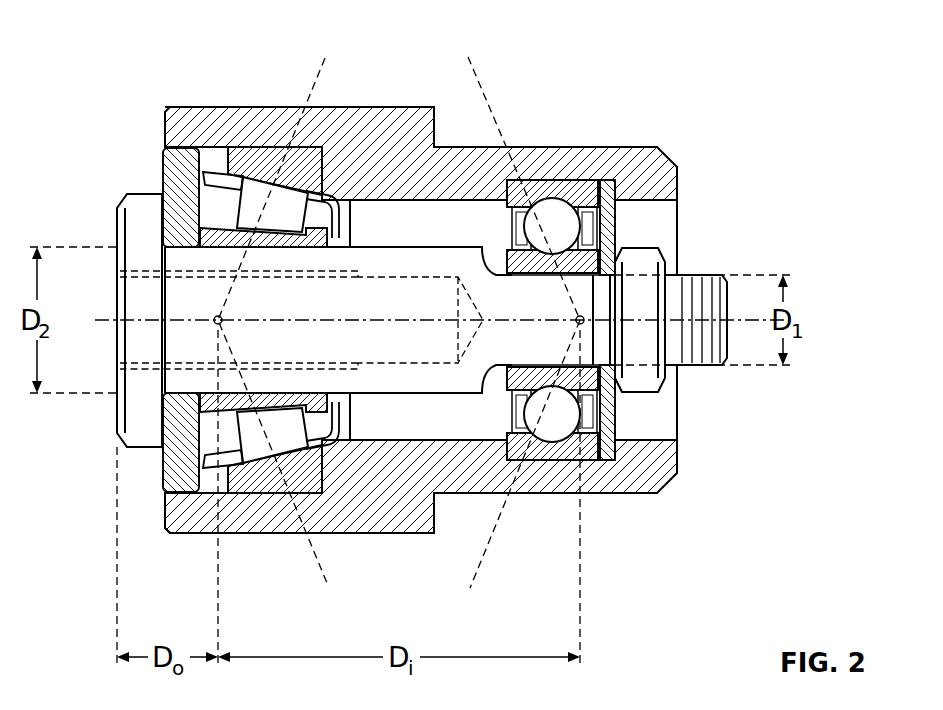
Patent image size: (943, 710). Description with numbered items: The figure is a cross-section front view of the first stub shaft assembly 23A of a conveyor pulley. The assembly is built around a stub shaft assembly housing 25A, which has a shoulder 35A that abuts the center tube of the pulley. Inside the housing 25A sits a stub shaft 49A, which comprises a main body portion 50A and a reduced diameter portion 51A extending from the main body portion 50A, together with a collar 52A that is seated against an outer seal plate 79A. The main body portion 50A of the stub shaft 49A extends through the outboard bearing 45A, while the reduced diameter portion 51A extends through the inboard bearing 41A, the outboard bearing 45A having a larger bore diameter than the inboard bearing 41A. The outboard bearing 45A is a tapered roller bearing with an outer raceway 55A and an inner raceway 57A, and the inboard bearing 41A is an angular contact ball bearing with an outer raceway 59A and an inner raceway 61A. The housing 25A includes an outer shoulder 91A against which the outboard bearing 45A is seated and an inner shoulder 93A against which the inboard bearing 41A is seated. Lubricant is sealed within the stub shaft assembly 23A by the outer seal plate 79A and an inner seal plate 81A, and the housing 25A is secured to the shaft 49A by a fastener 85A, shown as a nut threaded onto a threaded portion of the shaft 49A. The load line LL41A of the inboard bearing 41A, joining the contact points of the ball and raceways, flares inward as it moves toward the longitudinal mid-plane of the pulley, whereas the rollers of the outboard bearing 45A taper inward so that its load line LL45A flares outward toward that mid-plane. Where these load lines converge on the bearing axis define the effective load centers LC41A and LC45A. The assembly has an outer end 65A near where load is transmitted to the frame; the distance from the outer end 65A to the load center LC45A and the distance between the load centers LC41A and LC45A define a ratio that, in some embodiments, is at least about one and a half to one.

The first stub shaft assembly 23A is at (182, 97).
The stub shaft assembly housing 25A is at (392, 122).
The shoulder 35A is at (435, 507).
The inboard bearing 41A is at (574, 318).
The outboard bearing 45A is at (262, 315).
The stub shaft 49A is at (188, 292).
The main body portion 50A is at (317, 348).
The reduced diameter portion 51A is at (527, 287).
The collar 52A is at (118, 365).
The outer raceway 55A is at (252, 483).
The inner raceway 57A is at (172, 534).
The outer raceway 59A is at (550, 197).
The inner raceway 61A is at (597, 452).
The outer end 65A is at (118, 283).
The outer seal plate 79A is at (215, 316).
The inner seal plate 81A is at (608, 433).
The fastener 85A is at (648, 268).
The outer shoulder 91A is at (303, 172).
The inner shoulder 93A is at (510, 445).
The outboard bearing effective load center LC45A is at (177, 168).
The inboard bearing effective load center LC41A is at (556, 382).
The outboard bearing load line LL45A is at (322, 585).
The inboard bearing load line LL41A is at (478, 556).